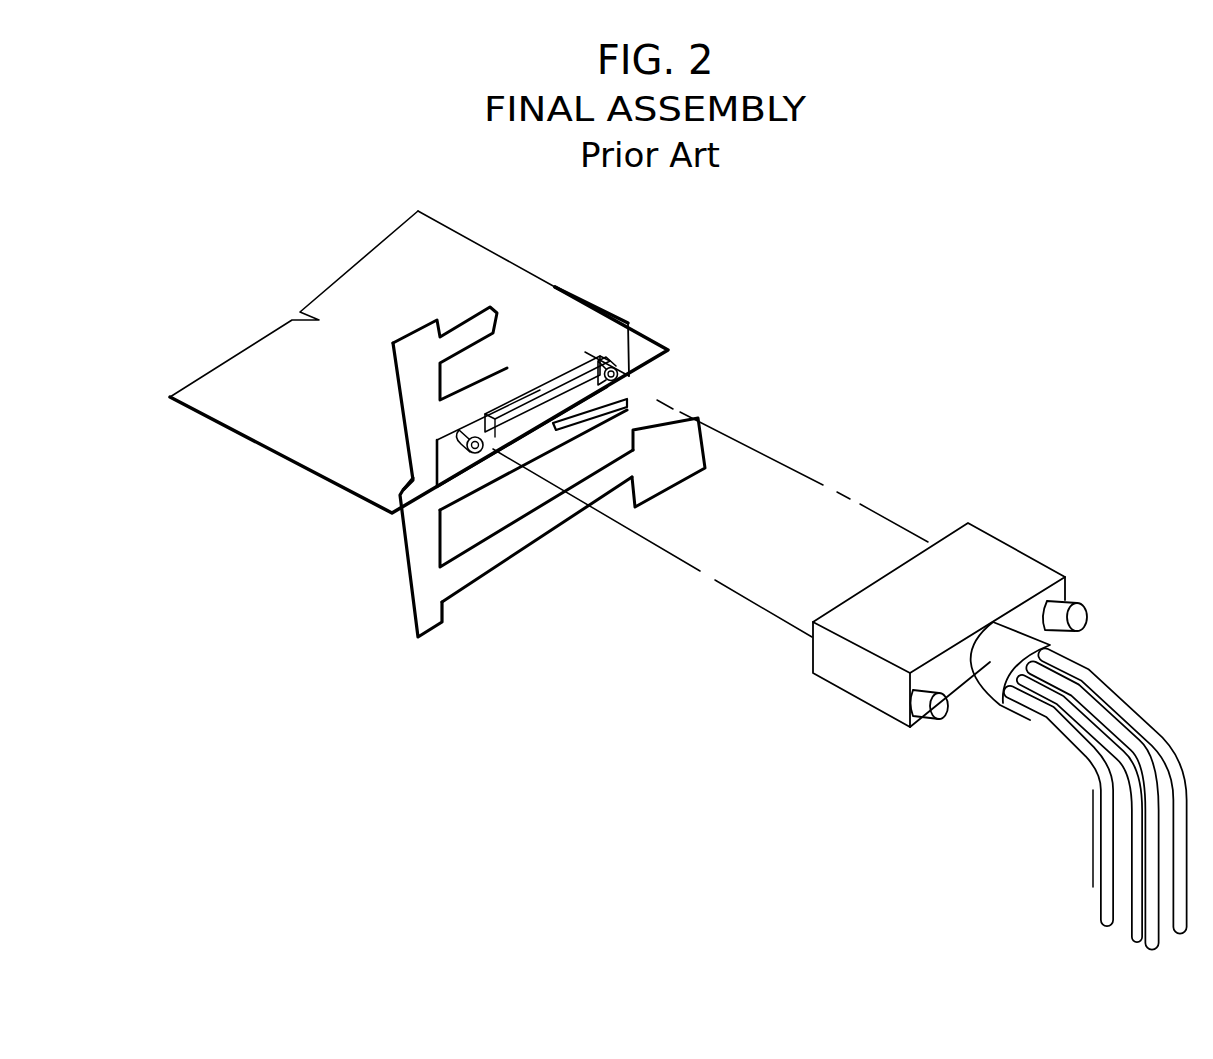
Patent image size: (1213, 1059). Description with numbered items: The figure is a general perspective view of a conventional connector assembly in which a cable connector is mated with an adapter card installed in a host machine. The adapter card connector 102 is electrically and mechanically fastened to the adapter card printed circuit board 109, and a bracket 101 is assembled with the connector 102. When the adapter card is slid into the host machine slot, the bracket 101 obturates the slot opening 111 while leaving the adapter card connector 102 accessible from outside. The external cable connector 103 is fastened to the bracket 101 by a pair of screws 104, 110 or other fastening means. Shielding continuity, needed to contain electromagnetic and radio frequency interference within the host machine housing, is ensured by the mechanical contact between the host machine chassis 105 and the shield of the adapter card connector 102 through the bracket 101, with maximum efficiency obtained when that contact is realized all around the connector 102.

The bracket 101 is at (628, 337).
The adapter card connector 102 is at (566, 396).
The cable connector 103 is at (1003, 541).
The screw 104 is at (1083, 607).
The host machine chassis 105 is at (508, 543).
The adapter card printed circuit board 109 is at (313, 440).
The screw 110 is at (468, 437).
The slot opening 111 is at (413, 487).